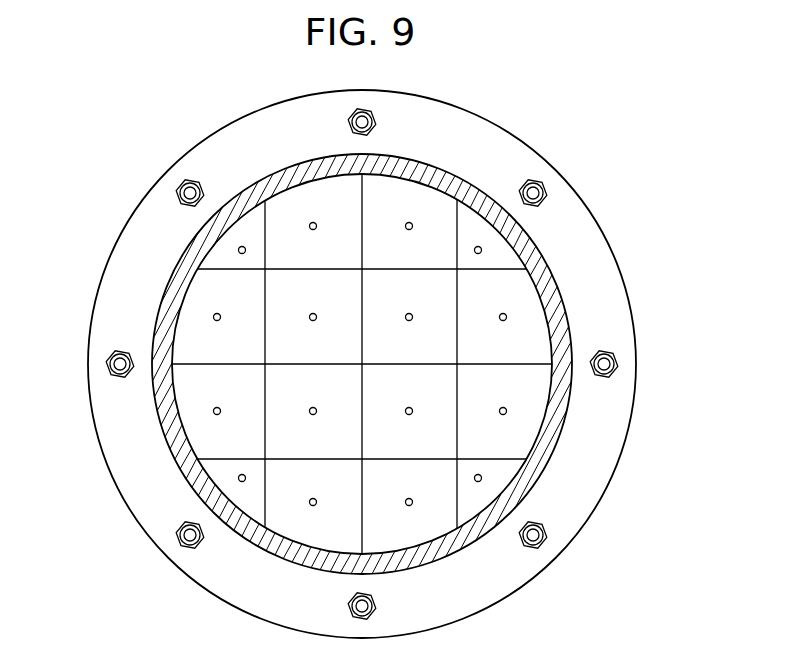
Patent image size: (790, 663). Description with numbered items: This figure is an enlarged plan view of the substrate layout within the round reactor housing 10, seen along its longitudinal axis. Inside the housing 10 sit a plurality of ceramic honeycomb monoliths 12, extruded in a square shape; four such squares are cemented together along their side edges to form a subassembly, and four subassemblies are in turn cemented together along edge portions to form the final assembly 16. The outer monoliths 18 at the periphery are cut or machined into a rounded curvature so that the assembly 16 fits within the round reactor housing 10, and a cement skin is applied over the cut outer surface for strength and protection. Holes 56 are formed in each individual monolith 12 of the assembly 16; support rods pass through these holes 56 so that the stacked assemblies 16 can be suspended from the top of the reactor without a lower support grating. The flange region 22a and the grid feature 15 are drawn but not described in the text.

The reactor housing 10 is at (567, 316).
The ceramic honeycomb monolith 12 is at (290, 297).
The grid partitions 15 is at (329, 269).
The final assembly 16 is at (430, 307).
The outer monolith 18 is at (375, 477).
The flange 22a is at (494, 152).
The hole 56 is at (313, 416).